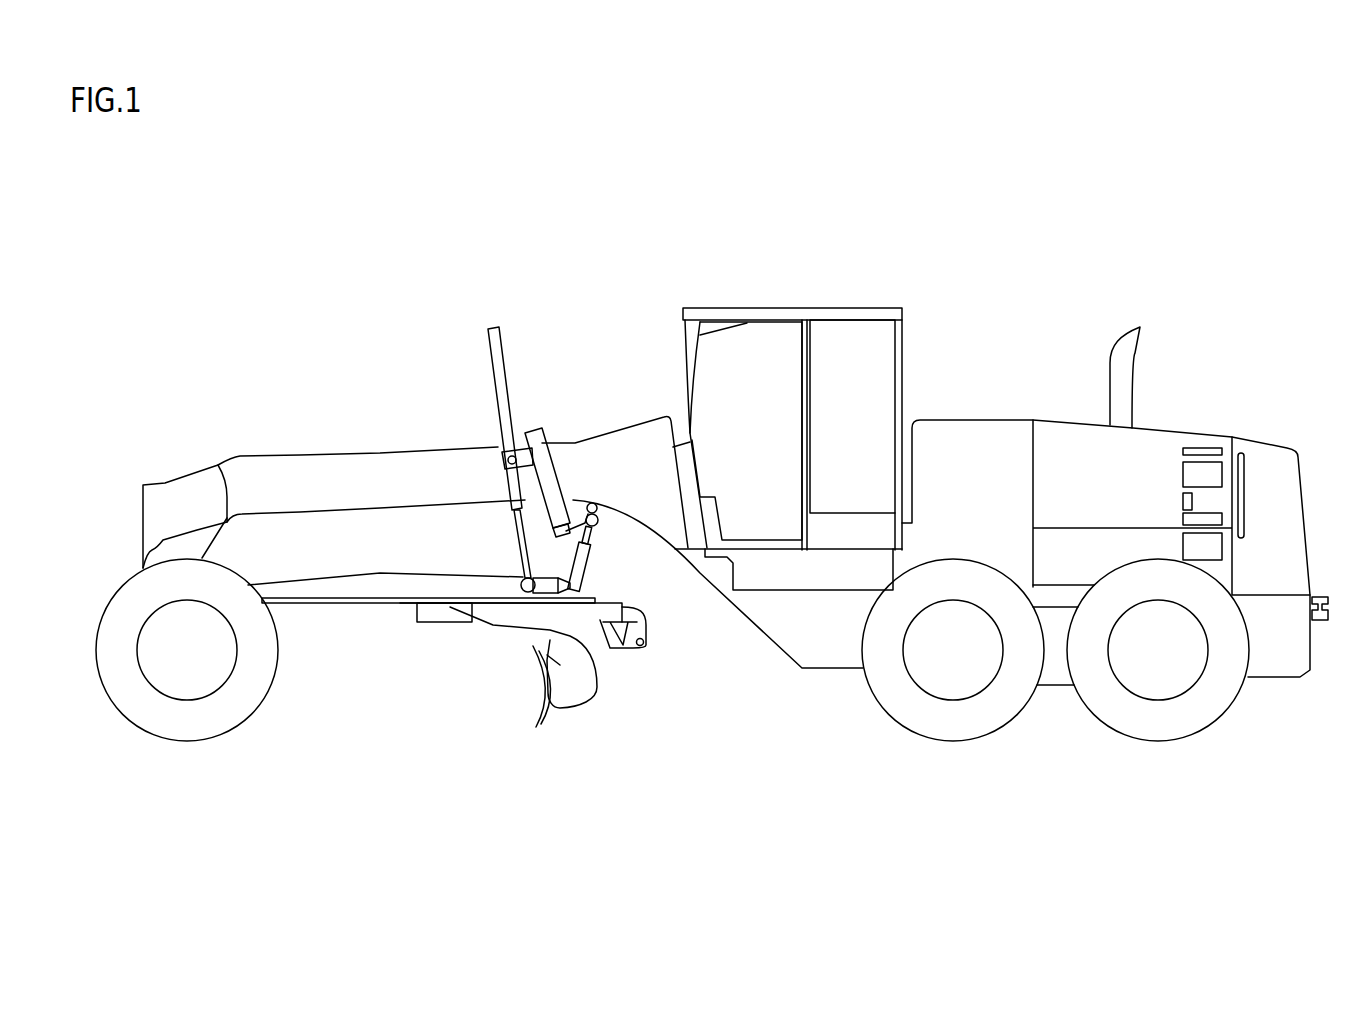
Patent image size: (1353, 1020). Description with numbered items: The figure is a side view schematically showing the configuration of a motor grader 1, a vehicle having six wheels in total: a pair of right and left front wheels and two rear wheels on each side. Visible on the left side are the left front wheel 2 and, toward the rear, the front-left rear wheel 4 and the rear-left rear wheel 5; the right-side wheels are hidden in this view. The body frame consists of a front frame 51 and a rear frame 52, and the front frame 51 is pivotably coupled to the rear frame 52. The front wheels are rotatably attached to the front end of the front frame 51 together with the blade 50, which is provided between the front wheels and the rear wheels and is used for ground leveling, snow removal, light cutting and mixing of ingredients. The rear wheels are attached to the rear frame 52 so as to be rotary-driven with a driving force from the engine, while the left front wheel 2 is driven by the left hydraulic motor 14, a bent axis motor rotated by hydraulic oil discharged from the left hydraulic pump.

The motor grader 1 is at (363, 268).
The left front wheel 2 is at (188, 718).
The front-left rear wheel 4 is at (953, 720).
The rear-left rear wheel 5 is at (1157, 720).
The left hydraulic motor 14 is at (173, 647).
The blade 50 is at (548, 698).
The front frame 51 is at (318, 482).
The rear frame 52 is at (1053, 665).